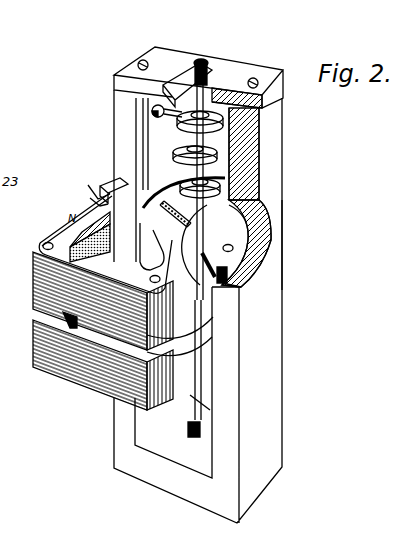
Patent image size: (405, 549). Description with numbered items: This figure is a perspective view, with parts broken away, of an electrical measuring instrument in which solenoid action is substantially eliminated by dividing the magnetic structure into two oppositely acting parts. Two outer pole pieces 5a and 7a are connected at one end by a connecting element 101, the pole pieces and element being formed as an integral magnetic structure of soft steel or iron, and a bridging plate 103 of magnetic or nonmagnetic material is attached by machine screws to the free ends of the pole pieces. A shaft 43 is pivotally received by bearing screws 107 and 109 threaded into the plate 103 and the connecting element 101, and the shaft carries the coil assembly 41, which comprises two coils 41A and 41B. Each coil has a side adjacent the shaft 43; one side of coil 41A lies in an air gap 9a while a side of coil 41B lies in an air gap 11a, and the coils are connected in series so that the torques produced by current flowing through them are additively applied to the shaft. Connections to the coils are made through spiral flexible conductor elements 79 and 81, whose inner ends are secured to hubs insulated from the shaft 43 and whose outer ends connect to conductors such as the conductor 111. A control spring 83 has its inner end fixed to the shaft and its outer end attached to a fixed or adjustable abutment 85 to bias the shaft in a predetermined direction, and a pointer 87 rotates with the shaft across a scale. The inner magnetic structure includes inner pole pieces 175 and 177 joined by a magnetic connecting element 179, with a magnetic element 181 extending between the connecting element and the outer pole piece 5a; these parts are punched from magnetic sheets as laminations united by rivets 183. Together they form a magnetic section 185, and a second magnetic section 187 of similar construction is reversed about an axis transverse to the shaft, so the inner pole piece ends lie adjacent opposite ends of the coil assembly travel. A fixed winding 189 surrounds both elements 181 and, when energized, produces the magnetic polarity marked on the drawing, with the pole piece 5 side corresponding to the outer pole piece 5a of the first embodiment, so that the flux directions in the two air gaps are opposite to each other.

The shaft 5 is at (162, 250).
The outer pole piece 5a is at (125, 127).
The outer pole piece 7a is at (278, 167).
The air gap 9a is at (144, 252).
The air gap 11a is at (250, 243).
The coil assembly 41 is at (304, 269).
The coil 41A is at (172, 192).
The coil 41B is at (245, 283).
The shaft 43 is at (188, 418).
The spiral flexible conductor element 79 is at (217, 150).
The spiral flexible conductor element 81 is at (220, 188).
The control spring 83 is at (223, 128).
The abutment 85 is at (153, 113).
The pointer 87 is at (190, 77).
The connecting element 101 is at (175, 490).
The bridging plate 103 is at (243, 63).
The bearing screw 107 is at (200, 60).
The bearing screw 109 is at (186, 424).
The conductor 111 is at (112, 182).
The inner pole piece 175 is at (172, 212).
The inner pole piece 177 is at (240, 227).
The magnetic connecting element 179 is at (63, 227).
The magnetic element 181 is at (90, 217).
The rivet 183 is at (43, 245).
The magnetic section 185 is at (37, 263).
The magnetic section 187 is at (33, 329).
The fixed winding 189 is at (97, 188).